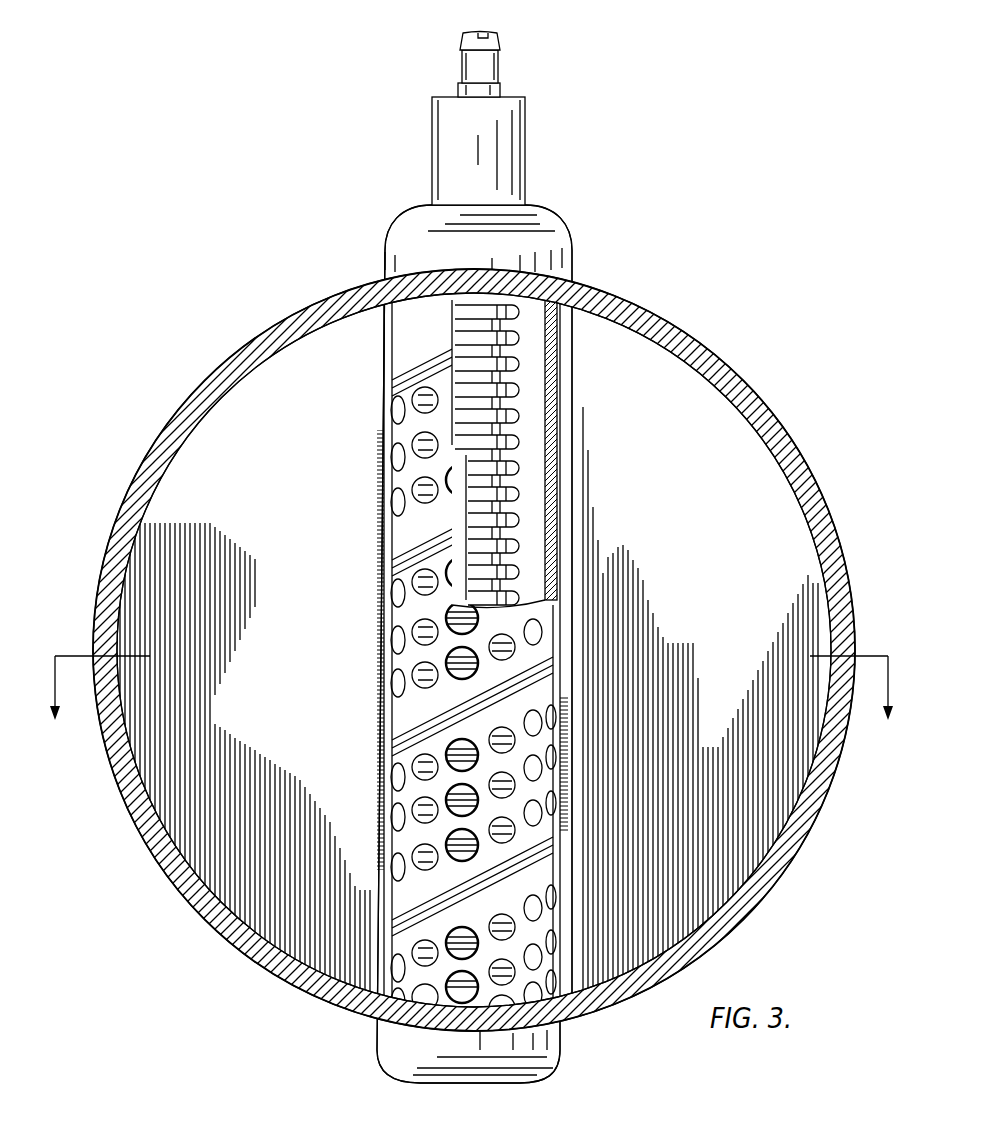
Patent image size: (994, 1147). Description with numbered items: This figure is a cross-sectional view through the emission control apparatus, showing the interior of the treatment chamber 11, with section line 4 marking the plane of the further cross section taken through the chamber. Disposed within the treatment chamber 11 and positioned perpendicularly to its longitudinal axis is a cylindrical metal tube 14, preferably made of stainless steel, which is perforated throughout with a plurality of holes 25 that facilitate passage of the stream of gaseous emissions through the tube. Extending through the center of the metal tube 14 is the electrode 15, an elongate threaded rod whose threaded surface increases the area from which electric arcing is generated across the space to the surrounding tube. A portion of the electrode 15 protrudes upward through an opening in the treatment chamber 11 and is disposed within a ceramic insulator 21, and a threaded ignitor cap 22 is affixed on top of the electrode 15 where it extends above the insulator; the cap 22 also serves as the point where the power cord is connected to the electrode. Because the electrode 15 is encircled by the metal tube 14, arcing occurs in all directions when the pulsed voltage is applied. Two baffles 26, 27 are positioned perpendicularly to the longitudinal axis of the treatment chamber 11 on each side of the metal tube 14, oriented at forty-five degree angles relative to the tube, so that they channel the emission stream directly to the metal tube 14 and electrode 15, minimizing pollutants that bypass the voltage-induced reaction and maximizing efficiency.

The section line 4- 4 is at (470, 681).
The treatment chamber 11 is at (784, 425).
The metal tube 14 is at (417, 323).
The electrode 15 is at (505, 380).
The ceramic insulator 21 is at (502, 147).
The threaded ignitor cap 22 is at (490, 42).
The holes 25 is at (462, 942).
The baffle 26 is at (694, 420).
The baffle 27 is at (275, 415).